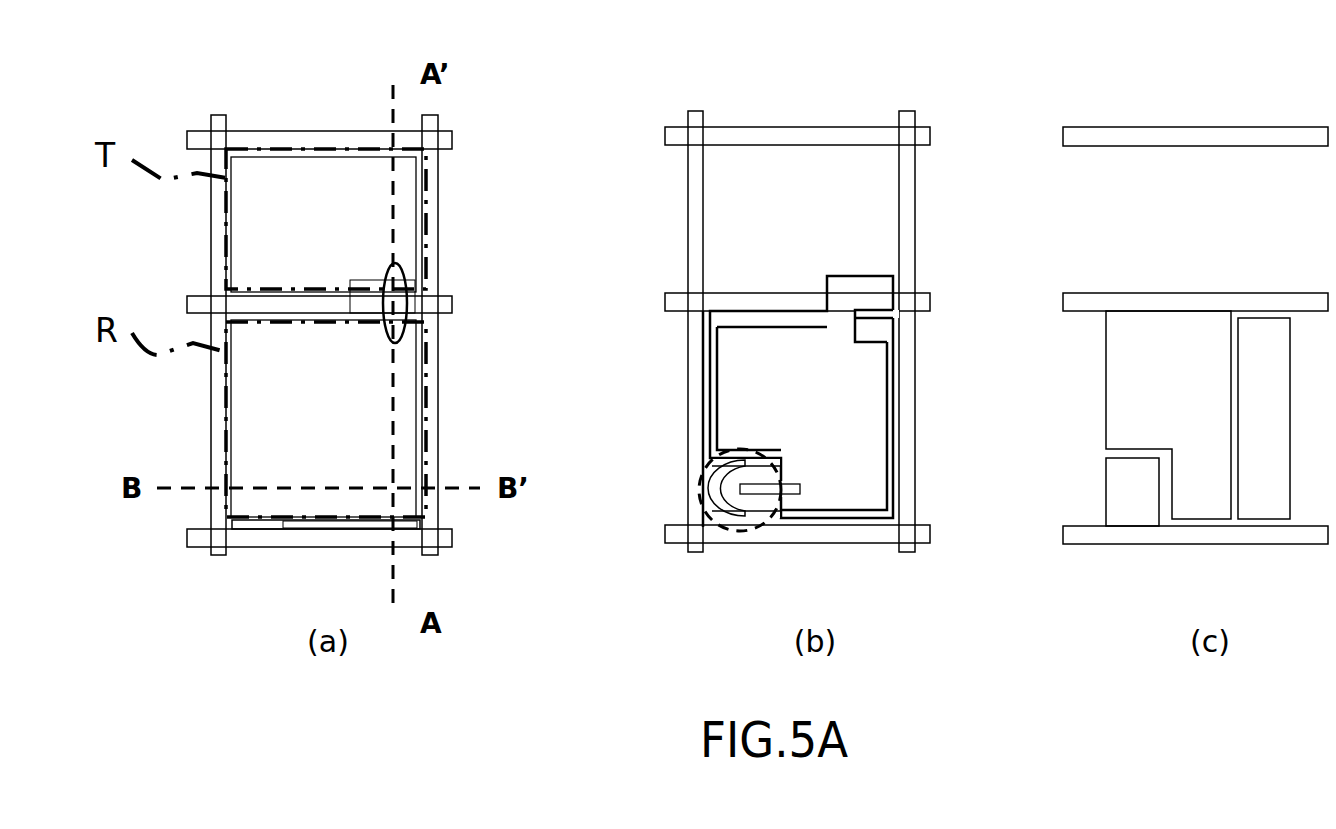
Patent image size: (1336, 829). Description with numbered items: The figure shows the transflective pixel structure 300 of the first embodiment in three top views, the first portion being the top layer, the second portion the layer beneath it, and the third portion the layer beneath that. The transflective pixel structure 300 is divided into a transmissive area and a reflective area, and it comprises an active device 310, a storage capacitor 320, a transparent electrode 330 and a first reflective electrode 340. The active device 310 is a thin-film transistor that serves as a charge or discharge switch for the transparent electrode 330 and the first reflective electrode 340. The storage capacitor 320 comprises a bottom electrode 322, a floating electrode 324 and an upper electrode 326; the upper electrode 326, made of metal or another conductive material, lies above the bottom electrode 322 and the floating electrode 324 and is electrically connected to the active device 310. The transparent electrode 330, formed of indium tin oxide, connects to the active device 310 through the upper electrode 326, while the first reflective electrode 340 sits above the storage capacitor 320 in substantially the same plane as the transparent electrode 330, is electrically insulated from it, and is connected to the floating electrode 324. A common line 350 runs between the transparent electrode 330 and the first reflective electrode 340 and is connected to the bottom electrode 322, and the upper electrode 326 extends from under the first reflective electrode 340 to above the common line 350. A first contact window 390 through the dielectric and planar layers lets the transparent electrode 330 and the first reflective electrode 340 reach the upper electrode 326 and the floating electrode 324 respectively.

The transflective pixel structure 300 is at (262, 608).
The active device 310 is at (694, 475).
The storage capacitor 320 is at (896, 401).
The bottom electrode 322 is at (711, 435).
The floating electrode 324 is at (873, 333).
The upper electrode 326 is at (748, 392).
The transparent electrode 330 is at (253, 224).
The first reflective electrode 340 is at (253, 396).
The common line 350 is at (678, 293).
The first contact window 390 is at (398, 290).